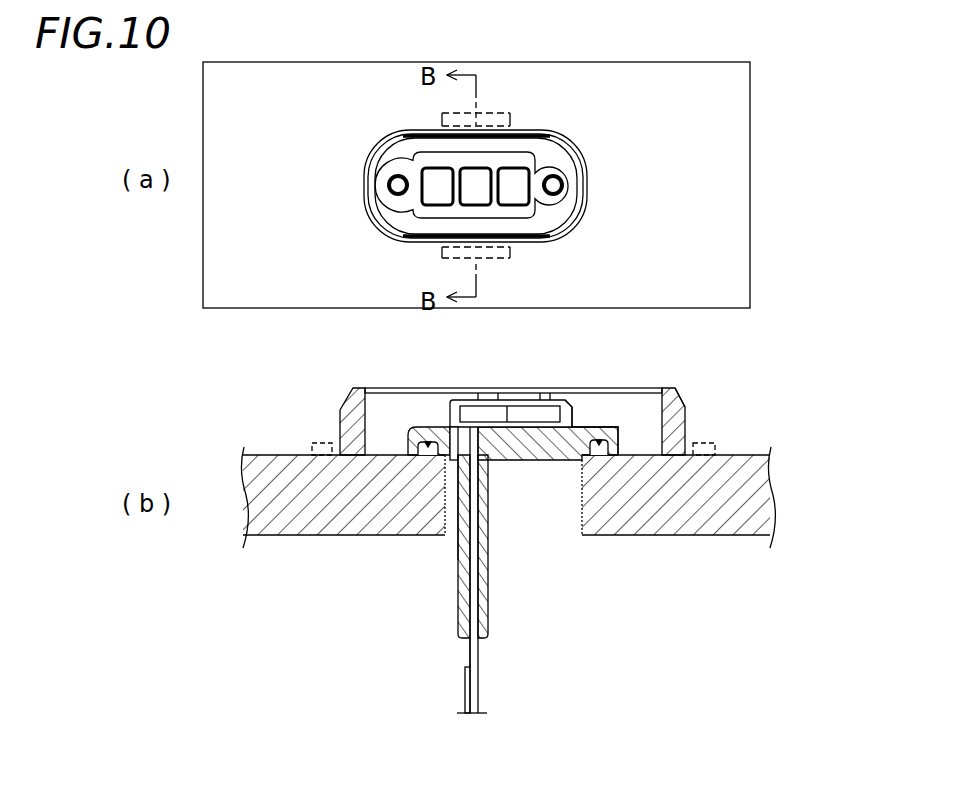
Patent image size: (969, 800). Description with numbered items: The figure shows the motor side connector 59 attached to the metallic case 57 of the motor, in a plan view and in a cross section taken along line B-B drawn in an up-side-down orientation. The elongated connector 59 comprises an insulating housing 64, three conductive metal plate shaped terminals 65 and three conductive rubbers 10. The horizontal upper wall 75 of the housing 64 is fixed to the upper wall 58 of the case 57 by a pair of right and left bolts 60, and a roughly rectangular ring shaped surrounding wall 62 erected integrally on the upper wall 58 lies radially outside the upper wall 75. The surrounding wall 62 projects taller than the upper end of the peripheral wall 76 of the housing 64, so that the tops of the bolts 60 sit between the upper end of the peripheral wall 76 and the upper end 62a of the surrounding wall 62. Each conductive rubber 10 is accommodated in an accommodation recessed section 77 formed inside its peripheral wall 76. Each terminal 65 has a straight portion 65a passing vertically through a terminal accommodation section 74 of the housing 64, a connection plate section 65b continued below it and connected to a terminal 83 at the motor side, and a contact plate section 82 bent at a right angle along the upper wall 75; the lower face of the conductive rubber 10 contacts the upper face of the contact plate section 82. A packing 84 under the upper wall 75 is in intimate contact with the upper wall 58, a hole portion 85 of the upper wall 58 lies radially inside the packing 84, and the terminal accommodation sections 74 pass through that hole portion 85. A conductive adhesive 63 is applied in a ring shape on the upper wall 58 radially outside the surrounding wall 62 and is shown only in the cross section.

The conductive rubber 10 is at (437, 190).
The case 57 is at (755, 168).
The upper wall 58 is at (720, 88).
The motor side connector 59 is at (548, 153).
The bolt 60 is at (562, 188).
The surrounding wall 62 is at (588, 168).
The upper end 62a is at (672, 387).
The conductive adhesive 63 is at (500, 258).
The housing 64 is at (517, 147).
The terminal 65 is at (464, 578).
The straight portion 65a is at (467, 552).
The connection plate section 65b is at (470, 653).
The terminal accommodation section 74 is at (490, 572).
The upper wall 75 is at (551, 140).
The peripheral wall 76 is at (423, 155).
The accommodation recessed section 77 is at (553, 402).
The contact plate section 82 is at (507, 406).
The terminal 83 is at (465, 693).
The packing 84 is at (428, 456).
The hole portion 85 is at (557, 517).